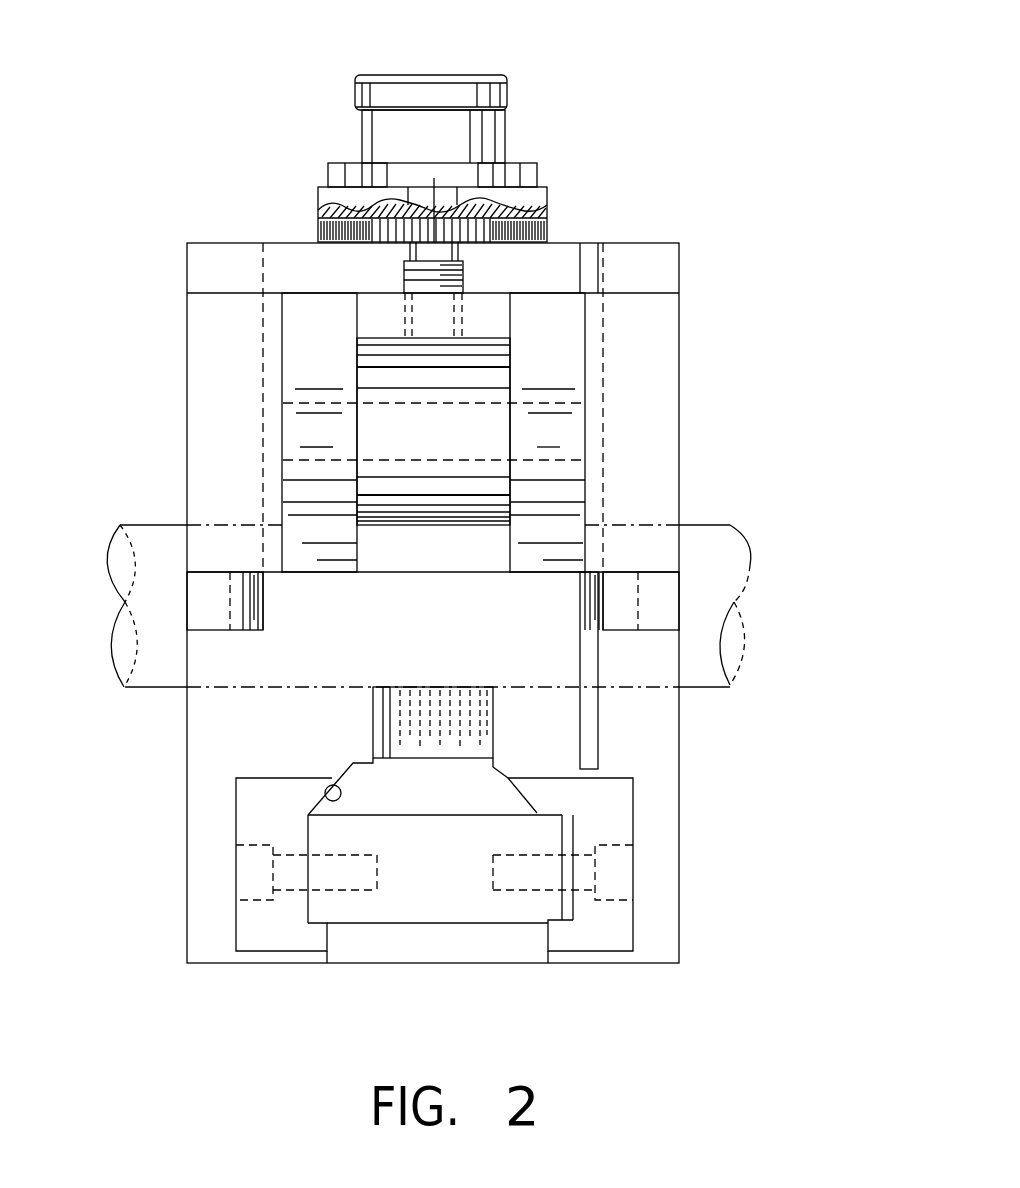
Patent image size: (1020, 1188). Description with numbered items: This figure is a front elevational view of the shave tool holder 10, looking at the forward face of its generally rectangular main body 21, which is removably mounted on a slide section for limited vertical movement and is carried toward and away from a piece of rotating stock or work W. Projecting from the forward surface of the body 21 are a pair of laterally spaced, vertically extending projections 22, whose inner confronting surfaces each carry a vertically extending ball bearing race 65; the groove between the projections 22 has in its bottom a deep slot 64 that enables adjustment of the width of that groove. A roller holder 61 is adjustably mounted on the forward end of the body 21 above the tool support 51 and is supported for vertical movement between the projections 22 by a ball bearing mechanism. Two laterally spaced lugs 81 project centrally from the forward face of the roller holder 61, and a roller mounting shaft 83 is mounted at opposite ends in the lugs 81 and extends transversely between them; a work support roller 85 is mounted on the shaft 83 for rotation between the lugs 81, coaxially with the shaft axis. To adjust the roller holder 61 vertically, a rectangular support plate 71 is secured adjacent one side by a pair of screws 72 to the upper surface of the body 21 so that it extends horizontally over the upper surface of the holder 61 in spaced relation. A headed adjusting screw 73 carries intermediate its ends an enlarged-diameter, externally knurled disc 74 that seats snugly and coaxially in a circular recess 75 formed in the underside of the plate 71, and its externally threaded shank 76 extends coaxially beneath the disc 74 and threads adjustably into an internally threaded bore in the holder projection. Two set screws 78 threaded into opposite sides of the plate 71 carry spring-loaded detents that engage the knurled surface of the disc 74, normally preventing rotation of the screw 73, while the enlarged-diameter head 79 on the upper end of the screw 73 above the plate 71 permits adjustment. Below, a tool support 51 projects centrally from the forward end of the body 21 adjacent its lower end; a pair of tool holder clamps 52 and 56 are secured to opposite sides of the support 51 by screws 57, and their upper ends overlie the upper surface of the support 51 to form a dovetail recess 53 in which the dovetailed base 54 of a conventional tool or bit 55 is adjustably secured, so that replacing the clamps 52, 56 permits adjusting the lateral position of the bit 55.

The shave tool holder 10 is at (762, 324).
The main body 21 is at (217, 272).
The projections 22 is at (206, 612).
The tool support 51 is at (363, 937).
The tool holder clamp 52 is at (250, 925).
The dovetail recess 53 is at (337, 787).
The dovetailed base 54 is at (413, 797).
The tool or bit 55 is at (480, 722).
The tool holder clamp 56 is at (618, 922).
The screws 57 is at (300, 857).
The roller holder 61 is at (206, 378).
The deep slot 64 is at (588, 670).
The ball bearing race 65 is at (265, 625).
The support plate 71 is at (547, 196).
The screws 72 is at (340, 170).
The adjusting screw 73 is at (408, 250).
The knurled disc 74 is at (468, 242).
The circular recess 75 is at (385, 208).
The externally threaded shank 76 is at (403, 280).
The set screws 78 is at (322, 222).
The head 79 is at (440, 74).
The lugs 81 is at (280, 438).
The roller mounting shaft 83 is at (474, 403).
The work support roller 85 is at (445, 445).
The work W is at (715, 568).